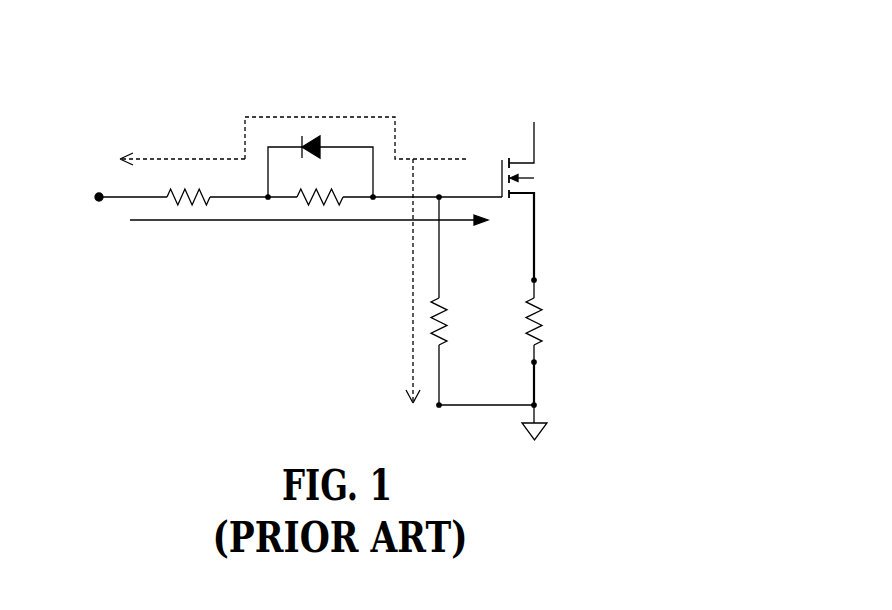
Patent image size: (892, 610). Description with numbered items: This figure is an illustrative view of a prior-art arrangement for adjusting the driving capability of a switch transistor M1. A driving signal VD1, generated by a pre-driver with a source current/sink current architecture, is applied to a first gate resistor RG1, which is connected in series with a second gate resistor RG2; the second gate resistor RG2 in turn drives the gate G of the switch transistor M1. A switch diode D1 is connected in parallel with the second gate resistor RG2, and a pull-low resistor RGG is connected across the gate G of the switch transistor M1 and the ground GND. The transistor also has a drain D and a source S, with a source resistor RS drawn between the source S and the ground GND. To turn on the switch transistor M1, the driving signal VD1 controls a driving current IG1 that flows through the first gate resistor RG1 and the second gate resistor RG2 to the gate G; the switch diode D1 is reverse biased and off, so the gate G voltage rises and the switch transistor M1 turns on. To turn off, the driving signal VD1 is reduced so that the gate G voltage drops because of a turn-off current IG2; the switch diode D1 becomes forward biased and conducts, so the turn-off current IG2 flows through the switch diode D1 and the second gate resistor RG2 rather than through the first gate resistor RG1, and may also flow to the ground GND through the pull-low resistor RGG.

The driving signal VD1 is at (71, 197).
The second gate resistor RG2 is at (189, 186).
The first gate resistor RG1 is at (320, 186).
The switch diode D1 is at (294, 145).
The driving current IG1 is at (309, 233).
The turn-off current IG2 is at (431, 264).
The pull-low resistor RGG is at (447, 301).
The switch transistor M1 is at (528, 201).
The drain D is at (521, 135).
The gate G is at (478, 183).
The source S is at (522, 217).
The source resistor RS is at (516, 342).
The ground GND is at (535, 438).